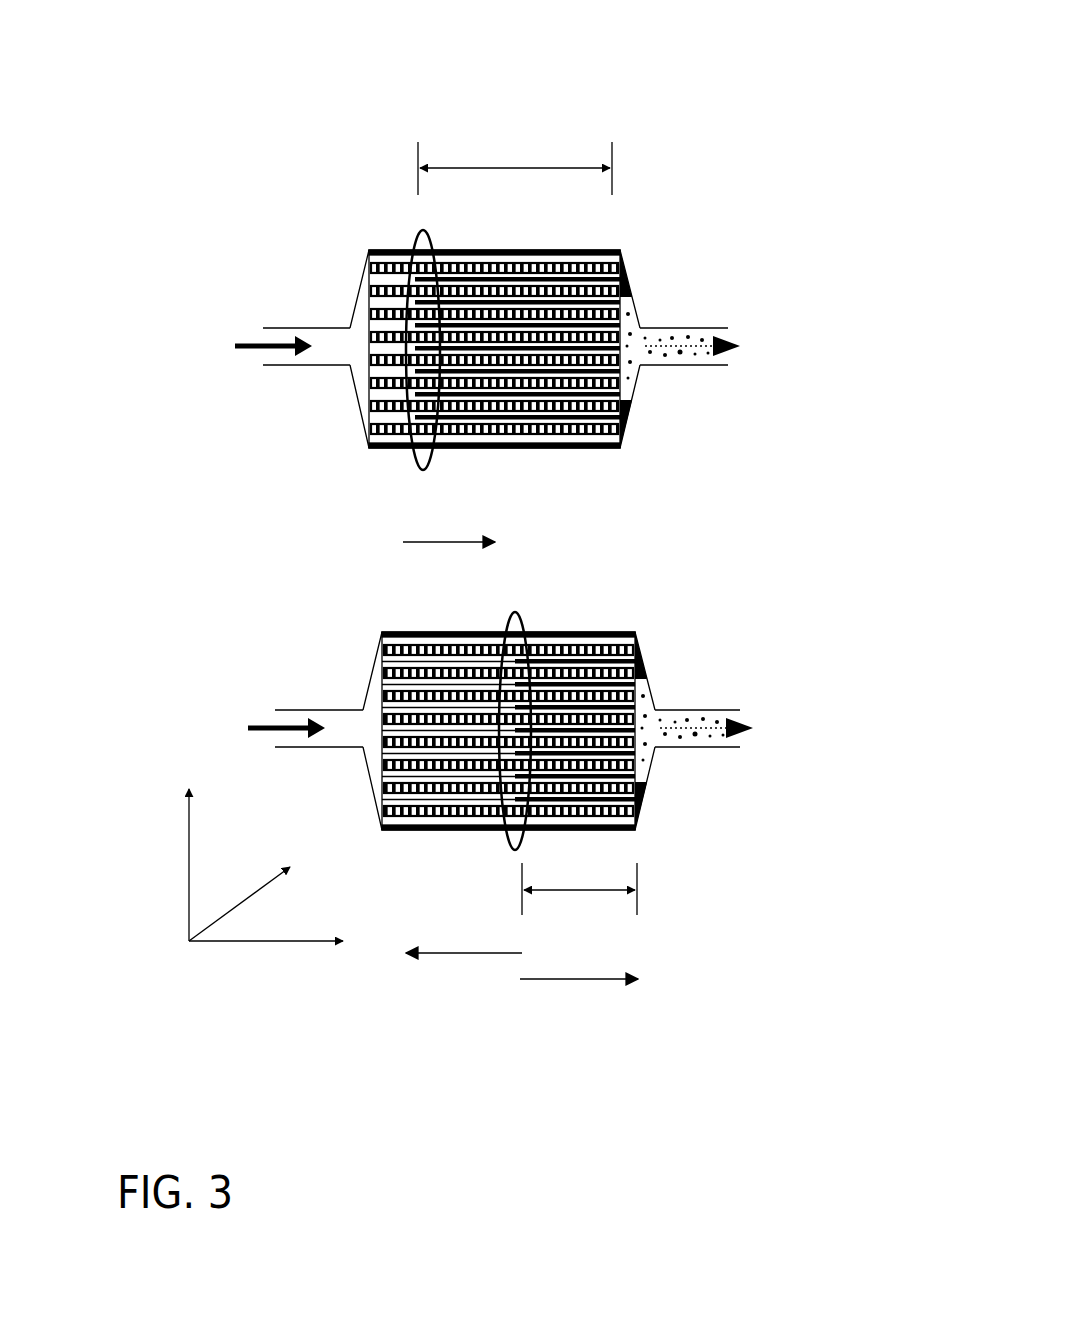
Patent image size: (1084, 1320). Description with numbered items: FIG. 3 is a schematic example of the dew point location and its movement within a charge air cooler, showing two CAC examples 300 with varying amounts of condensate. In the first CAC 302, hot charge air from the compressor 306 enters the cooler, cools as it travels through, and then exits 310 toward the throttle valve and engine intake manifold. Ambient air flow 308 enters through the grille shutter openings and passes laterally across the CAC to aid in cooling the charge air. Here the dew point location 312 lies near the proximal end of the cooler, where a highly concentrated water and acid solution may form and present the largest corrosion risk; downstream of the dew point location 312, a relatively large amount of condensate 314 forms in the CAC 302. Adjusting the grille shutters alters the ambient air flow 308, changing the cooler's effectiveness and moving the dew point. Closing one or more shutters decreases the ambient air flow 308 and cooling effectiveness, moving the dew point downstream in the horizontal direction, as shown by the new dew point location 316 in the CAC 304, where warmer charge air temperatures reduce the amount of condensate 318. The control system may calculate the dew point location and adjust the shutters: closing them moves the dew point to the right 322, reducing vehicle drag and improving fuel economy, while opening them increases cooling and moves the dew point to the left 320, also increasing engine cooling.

The CAC examples 300 is at (582, 48).
The first CAC 302 is at (806, 233).
The CAC 304 is at (811, 645).
The hot charge air from the compressor 306 is at (237, 333).
The ambient air flow 308 is at (508, 424).
The exit of charge air 310 is at (755, 347).
The dew point location 312 is at (405, 220).
The condensate 314 is at (515, 168).
The new dew point location 316 is at (508, 600).
The condensate 318 is at (579, 894).
The movement of dew point to the left 320 is at (456, 966).
The movement of dew point to the right 322 is at (598, 992).